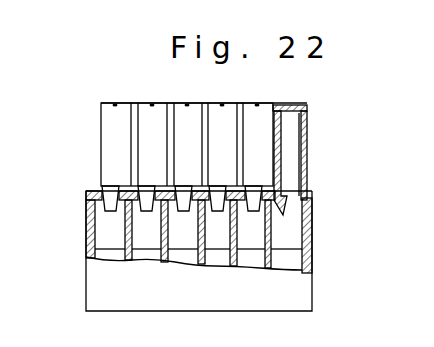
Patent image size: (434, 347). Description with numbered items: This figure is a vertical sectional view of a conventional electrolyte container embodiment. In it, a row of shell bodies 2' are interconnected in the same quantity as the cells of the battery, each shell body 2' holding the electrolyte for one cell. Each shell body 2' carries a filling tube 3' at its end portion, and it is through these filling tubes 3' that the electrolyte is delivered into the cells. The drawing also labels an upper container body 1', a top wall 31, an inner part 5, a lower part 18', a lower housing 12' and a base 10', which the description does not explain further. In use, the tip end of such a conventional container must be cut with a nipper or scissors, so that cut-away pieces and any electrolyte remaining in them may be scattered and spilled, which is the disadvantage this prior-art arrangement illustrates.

The plug housing 1' is at (159, 142).
The top wall 31 is at (118, 103).
The shell body 2' is at (308, 160).
The contact 5 is at (292, 125).
The filling tube 3' is at (154, 176).
The socket top plate 18' is at (159, 208).
The socket housing 12' is at (228, 243).
The circuit board 10' is at (241, 251).